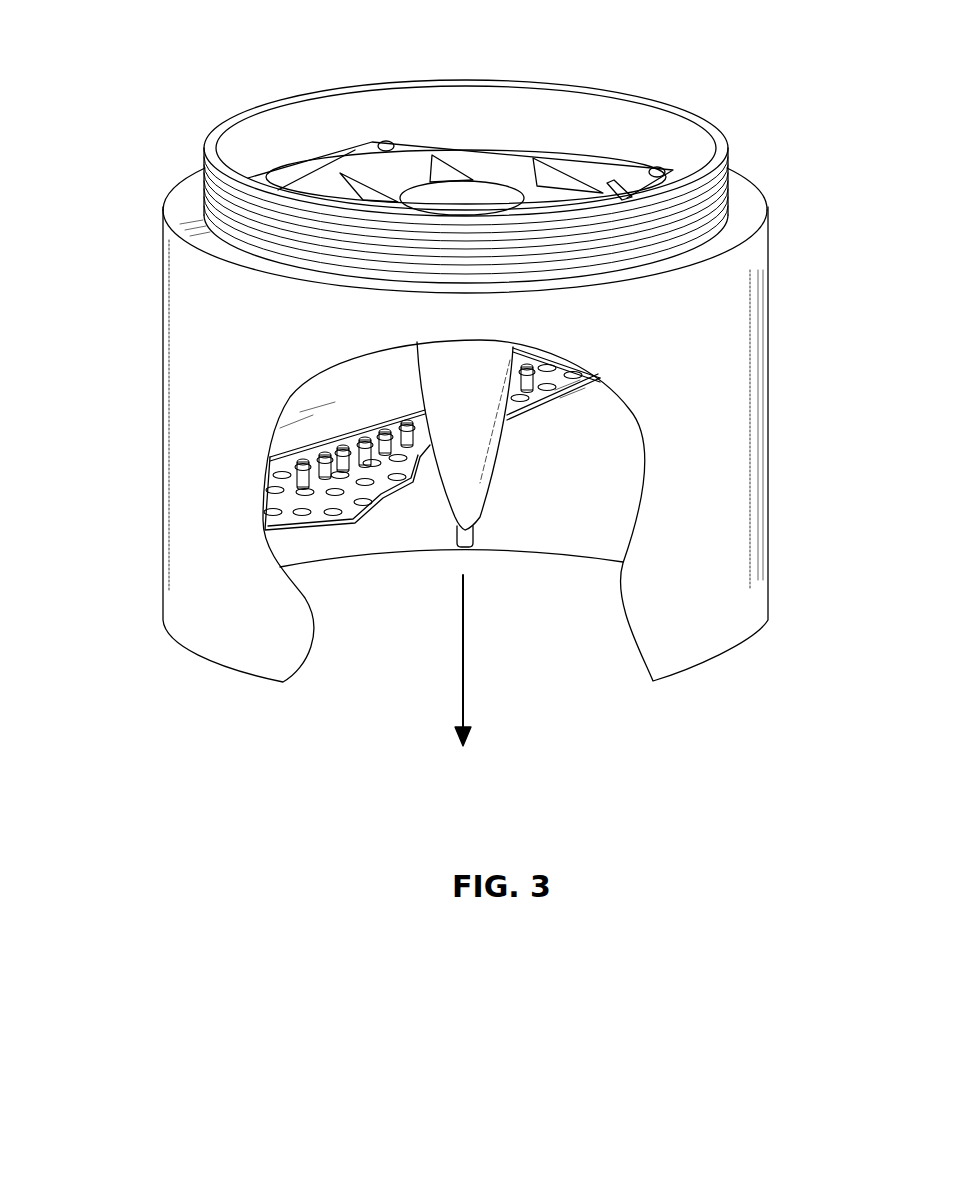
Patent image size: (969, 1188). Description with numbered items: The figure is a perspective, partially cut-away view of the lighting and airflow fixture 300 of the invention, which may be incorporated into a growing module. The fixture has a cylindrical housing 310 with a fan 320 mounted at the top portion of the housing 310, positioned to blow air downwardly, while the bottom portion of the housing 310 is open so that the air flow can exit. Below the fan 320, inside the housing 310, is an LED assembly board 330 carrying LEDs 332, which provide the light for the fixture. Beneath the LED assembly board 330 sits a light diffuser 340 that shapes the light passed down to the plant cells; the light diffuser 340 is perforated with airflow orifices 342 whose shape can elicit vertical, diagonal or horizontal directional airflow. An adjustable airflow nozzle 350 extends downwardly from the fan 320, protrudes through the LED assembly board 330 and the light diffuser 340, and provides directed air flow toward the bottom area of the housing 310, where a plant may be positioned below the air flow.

The lighting and airflow fixture 300 is at (709, 866).
The housing 310 is at (740, 350).
The fan 320 is at (493, 188).
The LED assembly board 330 is at (357, 417).
The LEDs 332 is at (322, 448).
The light diffuser 340 is at (320, 525).
The airflow orifices 342 is at (265, 483).
The adjustable airflow nozzle 350 is at (493, 418).